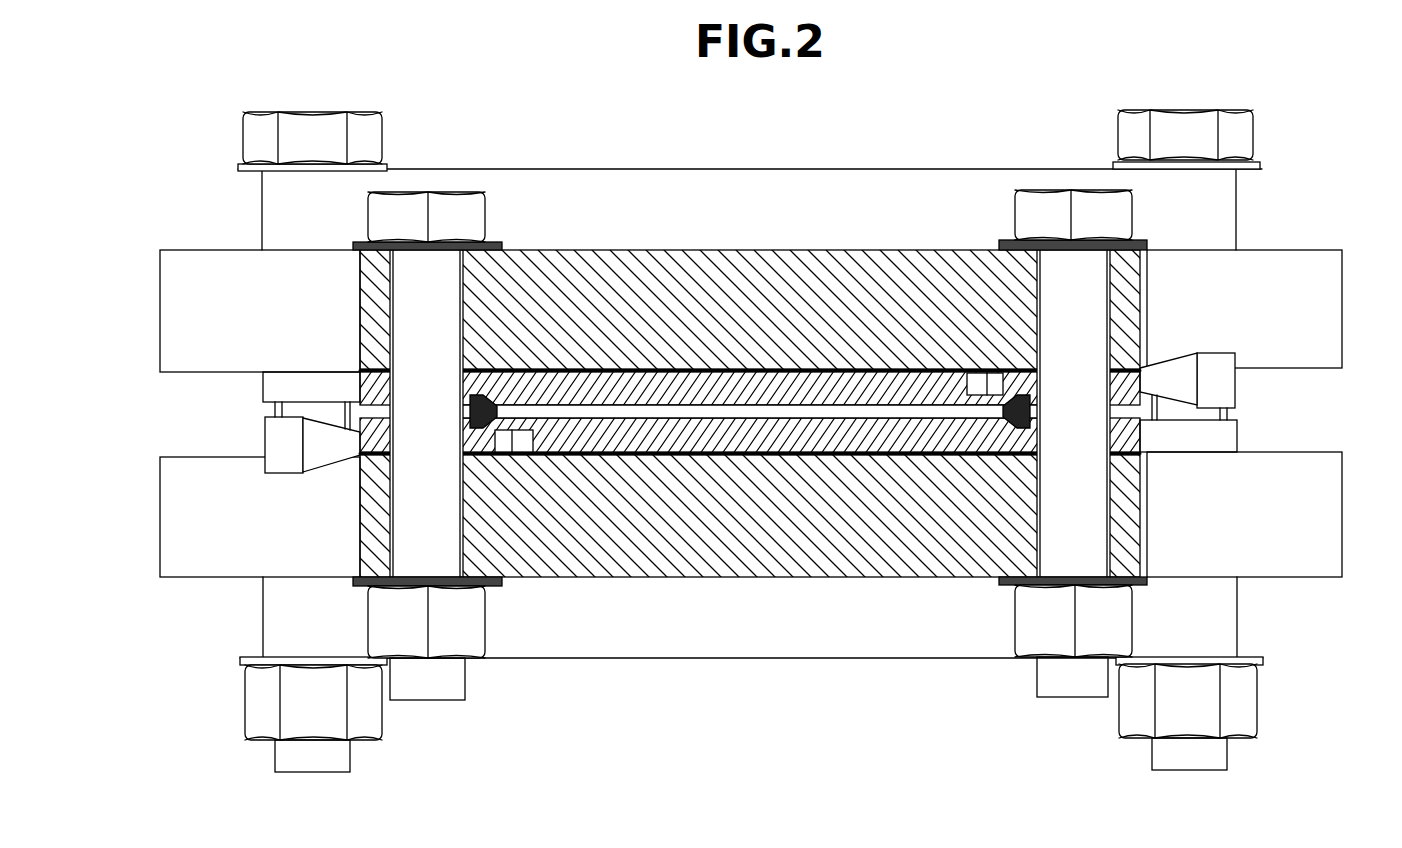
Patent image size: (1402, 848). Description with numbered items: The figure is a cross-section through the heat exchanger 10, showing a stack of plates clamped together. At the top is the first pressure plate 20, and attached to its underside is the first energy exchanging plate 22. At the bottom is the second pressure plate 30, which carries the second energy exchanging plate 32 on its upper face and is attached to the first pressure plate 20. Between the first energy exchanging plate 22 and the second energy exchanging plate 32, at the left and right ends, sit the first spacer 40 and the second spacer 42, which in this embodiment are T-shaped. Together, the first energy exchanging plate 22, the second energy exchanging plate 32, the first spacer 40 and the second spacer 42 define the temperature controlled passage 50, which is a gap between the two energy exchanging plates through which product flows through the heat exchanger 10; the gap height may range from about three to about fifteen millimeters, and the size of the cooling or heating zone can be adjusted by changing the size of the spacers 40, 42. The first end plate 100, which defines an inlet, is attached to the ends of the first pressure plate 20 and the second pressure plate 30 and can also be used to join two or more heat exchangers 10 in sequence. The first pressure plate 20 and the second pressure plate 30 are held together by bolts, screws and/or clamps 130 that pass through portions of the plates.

The heat exchanger 10 is at (973, 80).
The first pressure plate 20 is at (660, 287).
The first energy exchanging plate 22 is at (786, 390).
The second pressure plate 30 is at (710, 540).
The second energy exchanging plate 32 is at (880, 435).
The first spacer 40 is at (478, 382).
The second spacer 42 is at (1025, 440).
The temperature controlled passage 50 is at (607, 420).
The first end plate 100 is at (1203, 202).
The bolts, screws and/or clamps 130 is at (405, 217).